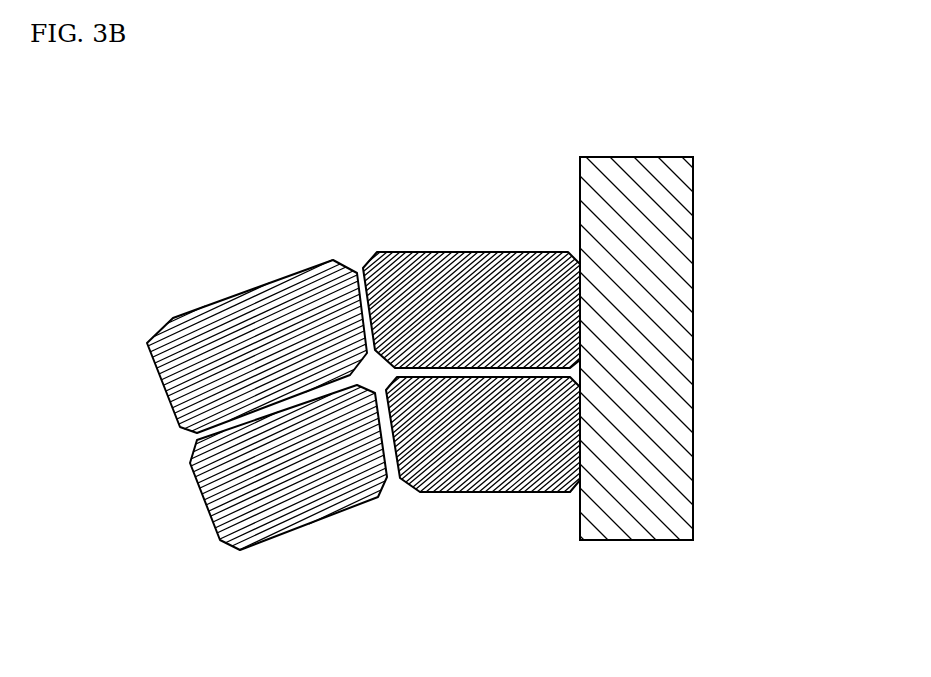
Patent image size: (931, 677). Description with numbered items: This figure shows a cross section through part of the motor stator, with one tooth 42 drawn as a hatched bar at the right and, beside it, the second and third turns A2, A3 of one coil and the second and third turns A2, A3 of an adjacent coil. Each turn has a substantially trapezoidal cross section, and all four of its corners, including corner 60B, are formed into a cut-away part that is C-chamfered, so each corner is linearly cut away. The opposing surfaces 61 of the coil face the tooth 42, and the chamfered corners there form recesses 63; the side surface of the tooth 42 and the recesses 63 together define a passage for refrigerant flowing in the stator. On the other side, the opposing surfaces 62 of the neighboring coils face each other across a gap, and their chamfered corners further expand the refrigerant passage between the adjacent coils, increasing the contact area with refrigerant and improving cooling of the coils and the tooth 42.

The tooth 42 is at (686, 424).
The opposing surface 61 is at (580, 314).
The opposing surface 62 is at (362, 312).
The recess 63 is at (397, 377).
The corner 60B is at (575, 252).
The third turn A3 is at (262, 276).
The second turn A2 is at (472, 513).